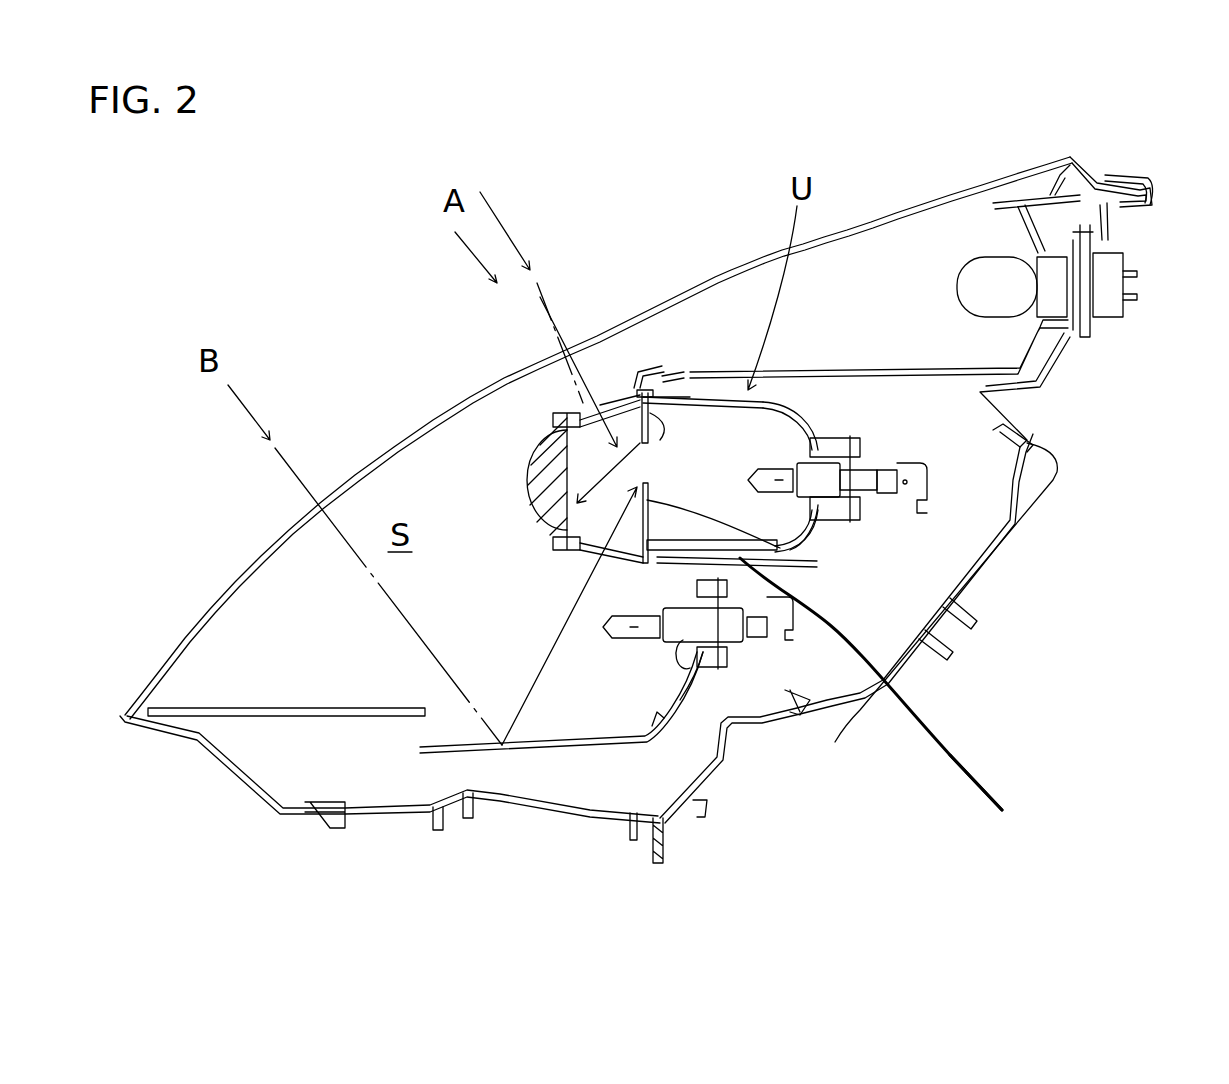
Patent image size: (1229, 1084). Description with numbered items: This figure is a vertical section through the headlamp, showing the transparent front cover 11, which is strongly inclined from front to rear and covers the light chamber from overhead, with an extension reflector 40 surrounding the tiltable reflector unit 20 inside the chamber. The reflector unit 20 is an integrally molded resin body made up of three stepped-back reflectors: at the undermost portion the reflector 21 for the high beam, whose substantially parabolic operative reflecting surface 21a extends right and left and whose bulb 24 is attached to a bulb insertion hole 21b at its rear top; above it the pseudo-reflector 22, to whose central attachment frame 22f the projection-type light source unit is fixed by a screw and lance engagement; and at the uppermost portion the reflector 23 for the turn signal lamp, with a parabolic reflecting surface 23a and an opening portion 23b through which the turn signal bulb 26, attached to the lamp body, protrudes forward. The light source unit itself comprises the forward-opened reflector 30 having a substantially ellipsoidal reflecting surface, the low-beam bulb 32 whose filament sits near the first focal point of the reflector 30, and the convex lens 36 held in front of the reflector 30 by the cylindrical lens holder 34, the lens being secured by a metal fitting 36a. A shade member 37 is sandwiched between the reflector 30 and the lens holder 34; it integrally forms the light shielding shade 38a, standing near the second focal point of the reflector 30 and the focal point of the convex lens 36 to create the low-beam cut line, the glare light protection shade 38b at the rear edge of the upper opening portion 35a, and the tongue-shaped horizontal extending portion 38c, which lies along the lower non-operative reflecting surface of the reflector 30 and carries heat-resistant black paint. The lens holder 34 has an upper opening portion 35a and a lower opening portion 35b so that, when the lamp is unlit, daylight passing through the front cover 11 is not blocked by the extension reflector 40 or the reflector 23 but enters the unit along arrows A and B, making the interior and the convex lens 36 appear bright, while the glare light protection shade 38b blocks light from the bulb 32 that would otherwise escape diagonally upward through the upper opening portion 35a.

The transparent front cover 11 is at (420, 427).
The reflector unit 20 is at (730, 364).
The reflector 21 is at (683, 715).
The operative reflecting surface 21a is at (658, 718).
The bulb insertion hole 21b is at (703, 673).
The pseudo-reflector 22 is at (772, 568).
The attachment frame 22f is at (1003, 814).
The reflector 23 is at (1080, 226).
The reflecting surface 23a is at (1020, 238).
The opening portion 23b is at (1120, 285).
The bulb 24 is at (640, 658).
The bulb 26 is at (951, 260).
The reflector 30 is at (762, 399).
The bulb 32 is at (790, 462).
The lens holder 34 is at (640, 390).
The upper opening portion 35a is at (620, 388).
The lower opening portion 35b is at (600, 562).
The convex lens 36 is at (527, 478).
The metal fitting 36a is at (560, 413).
The shade member 37 is at (633, 538).
The light shielding shade 38a is at (800, 537).
The glare light protection shade 38b is at (680, 398).
The tongue-shaped horizontal extending portion 38c is at (815, 562).
The extension reflector 40 is at (220, 708).